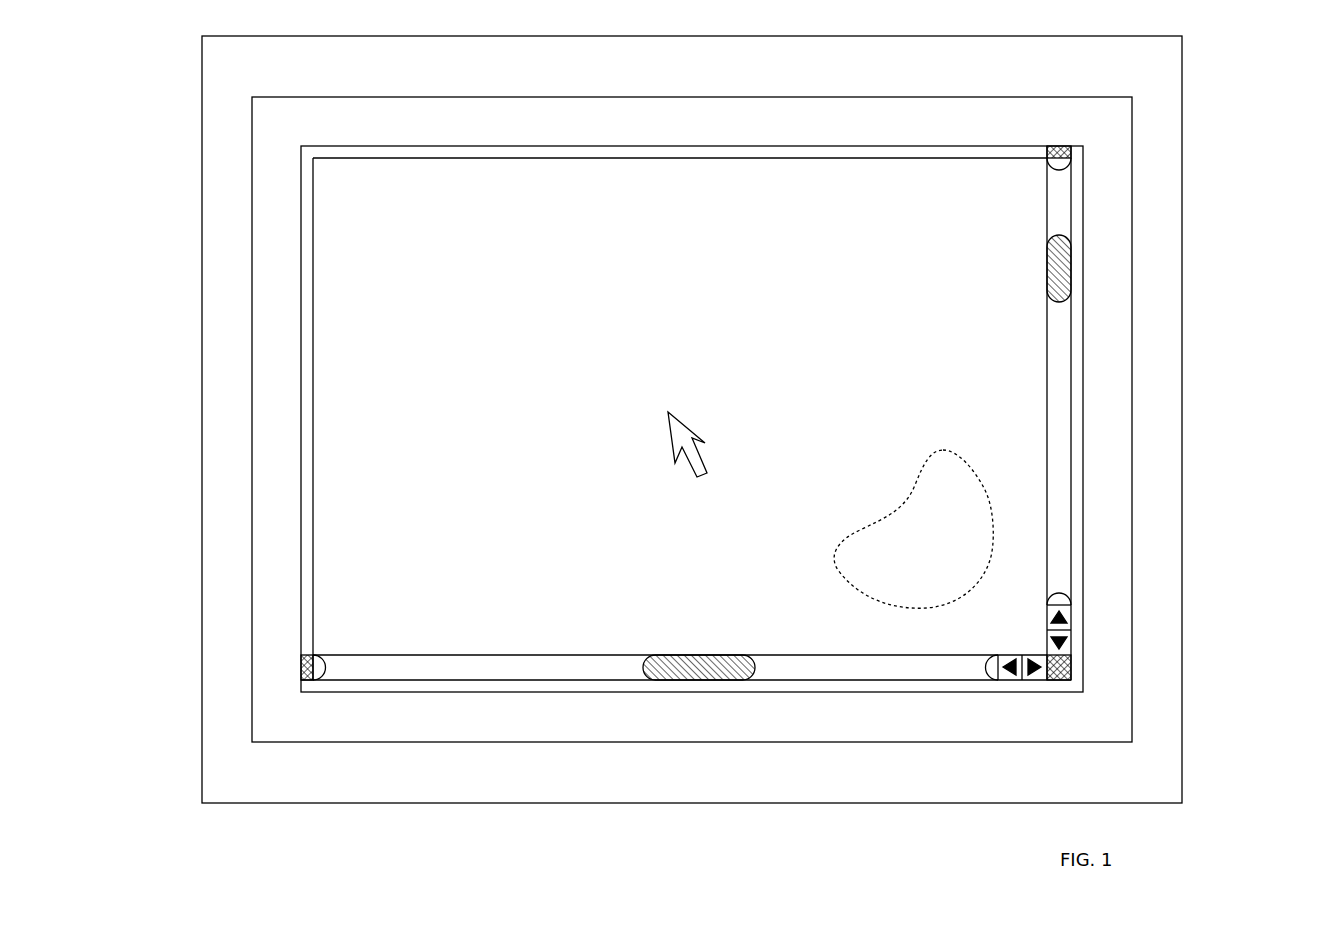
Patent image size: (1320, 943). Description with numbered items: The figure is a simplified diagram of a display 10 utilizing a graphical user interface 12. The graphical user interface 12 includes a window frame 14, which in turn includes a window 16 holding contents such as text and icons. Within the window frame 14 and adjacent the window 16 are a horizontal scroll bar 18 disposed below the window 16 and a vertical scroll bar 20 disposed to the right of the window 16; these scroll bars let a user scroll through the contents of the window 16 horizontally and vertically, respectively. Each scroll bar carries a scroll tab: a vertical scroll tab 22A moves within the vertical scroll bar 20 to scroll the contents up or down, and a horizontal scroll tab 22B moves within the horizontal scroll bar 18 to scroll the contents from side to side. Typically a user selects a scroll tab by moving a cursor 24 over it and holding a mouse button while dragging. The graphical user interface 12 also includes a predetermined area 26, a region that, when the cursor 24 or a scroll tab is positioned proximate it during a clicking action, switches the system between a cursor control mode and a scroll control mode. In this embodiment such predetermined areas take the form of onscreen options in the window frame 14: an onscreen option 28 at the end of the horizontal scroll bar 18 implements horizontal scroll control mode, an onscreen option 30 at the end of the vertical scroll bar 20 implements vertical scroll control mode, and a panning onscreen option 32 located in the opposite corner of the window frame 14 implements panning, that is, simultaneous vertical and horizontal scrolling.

The display 10 is at (1240, 126).
The graphical user interface 12 is at (1102, 424).
The window frame 14 is at (298, 238).
The window 16 is at (348, 365).
The horizontal scroll bar 18 is at (822, 680).
The vertical scroll bar 20 is at (1075, 533).
The vertical scroll tab 22A is at (1073, 254).
The horizontal scroll tab 22B is at (671, 660).
The cursor 24 is at (692, 427).
The predetermined area 26 is at (927, 508).
The onscreen option 28 is at (298, 657).
The onscreen option 30 is at (1073, 149).
The panning onscreen option 32 is at (1067, 662).